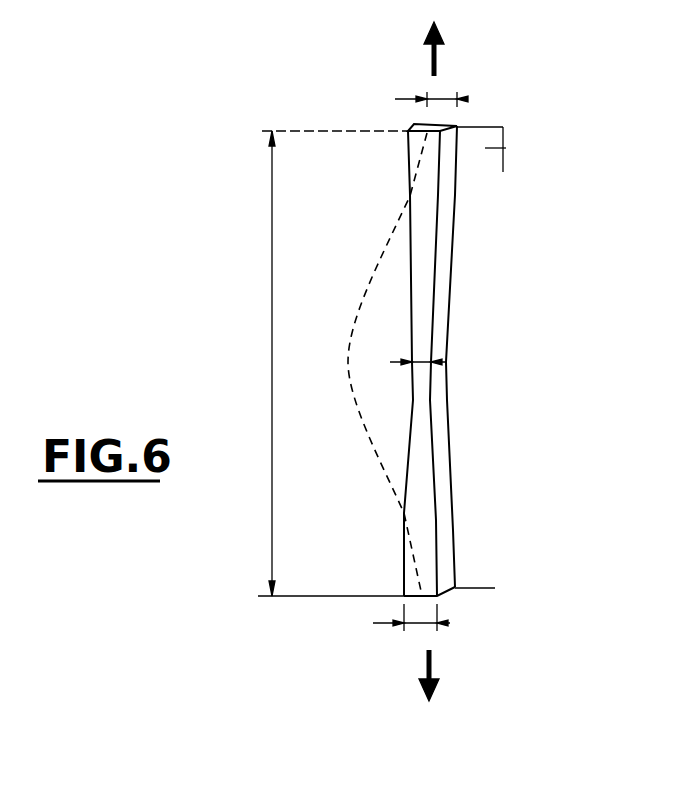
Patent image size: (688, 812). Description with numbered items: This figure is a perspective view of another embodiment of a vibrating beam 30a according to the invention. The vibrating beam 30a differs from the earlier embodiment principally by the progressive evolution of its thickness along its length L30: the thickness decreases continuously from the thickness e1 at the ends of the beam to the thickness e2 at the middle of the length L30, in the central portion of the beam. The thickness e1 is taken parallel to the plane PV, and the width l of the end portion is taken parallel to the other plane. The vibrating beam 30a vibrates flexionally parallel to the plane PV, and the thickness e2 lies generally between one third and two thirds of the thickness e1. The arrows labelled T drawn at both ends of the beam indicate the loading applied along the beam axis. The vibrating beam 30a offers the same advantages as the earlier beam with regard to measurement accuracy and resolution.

The vibrating beam 30a is at (327, 300).
The tension force T is at (440, 363).
The length of the vibrating beam L30 is at (310, 363).
The thickness of the ends e1 is at (404, 359).
The thickness at the middle e2 is at (403, 363).
The plane PV is at (506, 148).
The width l is at (462, 605).